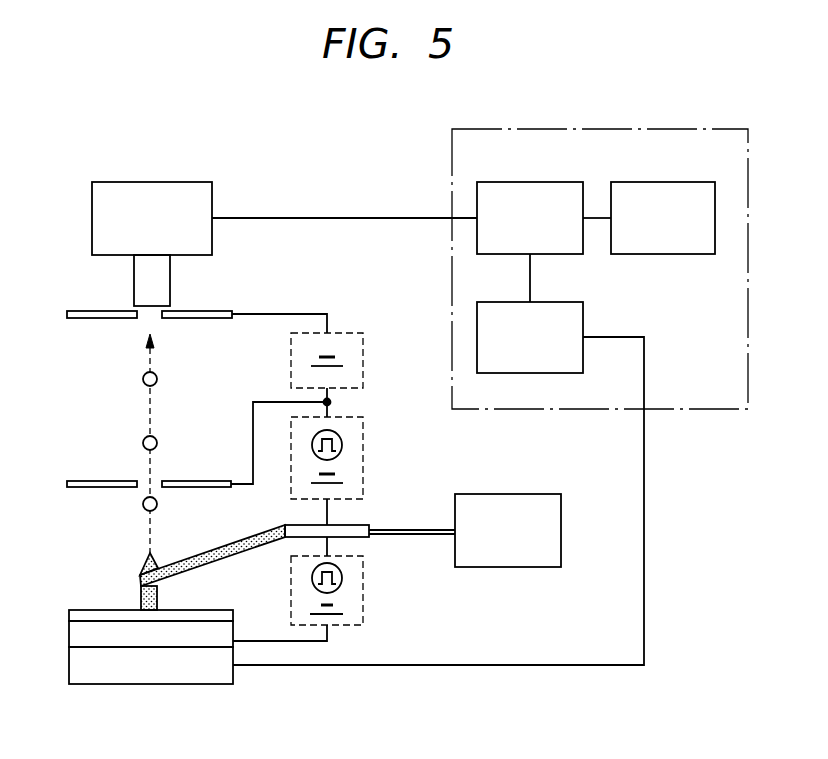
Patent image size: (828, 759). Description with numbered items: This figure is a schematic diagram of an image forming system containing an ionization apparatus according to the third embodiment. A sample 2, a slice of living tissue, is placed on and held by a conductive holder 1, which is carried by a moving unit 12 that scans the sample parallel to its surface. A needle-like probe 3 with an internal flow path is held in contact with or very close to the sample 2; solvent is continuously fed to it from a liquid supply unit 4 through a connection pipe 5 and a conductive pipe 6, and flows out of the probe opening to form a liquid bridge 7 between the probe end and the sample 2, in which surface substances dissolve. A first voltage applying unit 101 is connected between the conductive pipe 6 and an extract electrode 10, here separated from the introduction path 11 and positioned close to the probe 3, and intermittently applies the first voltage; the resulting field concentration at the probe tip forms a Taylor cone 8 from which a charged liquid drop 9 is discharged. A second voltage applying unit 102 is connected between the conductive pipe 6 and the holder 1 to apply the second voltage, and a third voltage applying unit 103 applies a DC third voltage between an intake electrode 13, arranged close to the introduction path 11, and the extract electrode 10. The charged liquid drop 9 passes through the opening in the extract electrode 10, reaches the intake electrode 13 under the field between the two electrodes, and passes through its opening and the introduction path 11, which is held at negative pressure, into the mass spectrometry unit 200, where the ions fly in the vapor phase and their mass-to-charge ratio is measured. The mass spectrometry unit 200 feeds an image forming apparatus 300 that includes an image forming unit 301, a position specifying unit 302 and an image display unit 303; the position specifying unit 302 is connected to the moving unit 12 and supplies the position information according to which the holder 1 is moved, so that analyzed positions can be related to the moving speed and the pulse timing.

The holder 1 is at (73, 633).
The sample 2 is at (71, 617).
The probe 3 is at (205, 552).
The liquid supply unit 4 is at (508, 559).
The connection pipe 5 is at (433, 528).
The conductive pipe 6 is at (310, 529).
The liquid bridge 7 is at (140, 593).
The Taylor cone 8 is at (142, 572).
The charged liquid drop 9 is at (143, 443).
The extract electrode 10 is at (85, 487).
The introduction path 11 is at (138, 278).
The moving unit 12 is at (73, 664).
The intake electrode 13 is at (85, 318).
The first voltage applying unit 101 is at (363, 451).
The second voltage applying unit 102 is at (363, 588).
The third voltage applying unit 103 is at (363, 355).
The mass spectrometry unit 200 is at (153, 192).
The image forming apparatus 300 is at (690, 127).
The image forming unit 301 is at (528, 190).
The position specifying unit 302 is at (574, 326).
The image display unit 303 is at (660, 190).